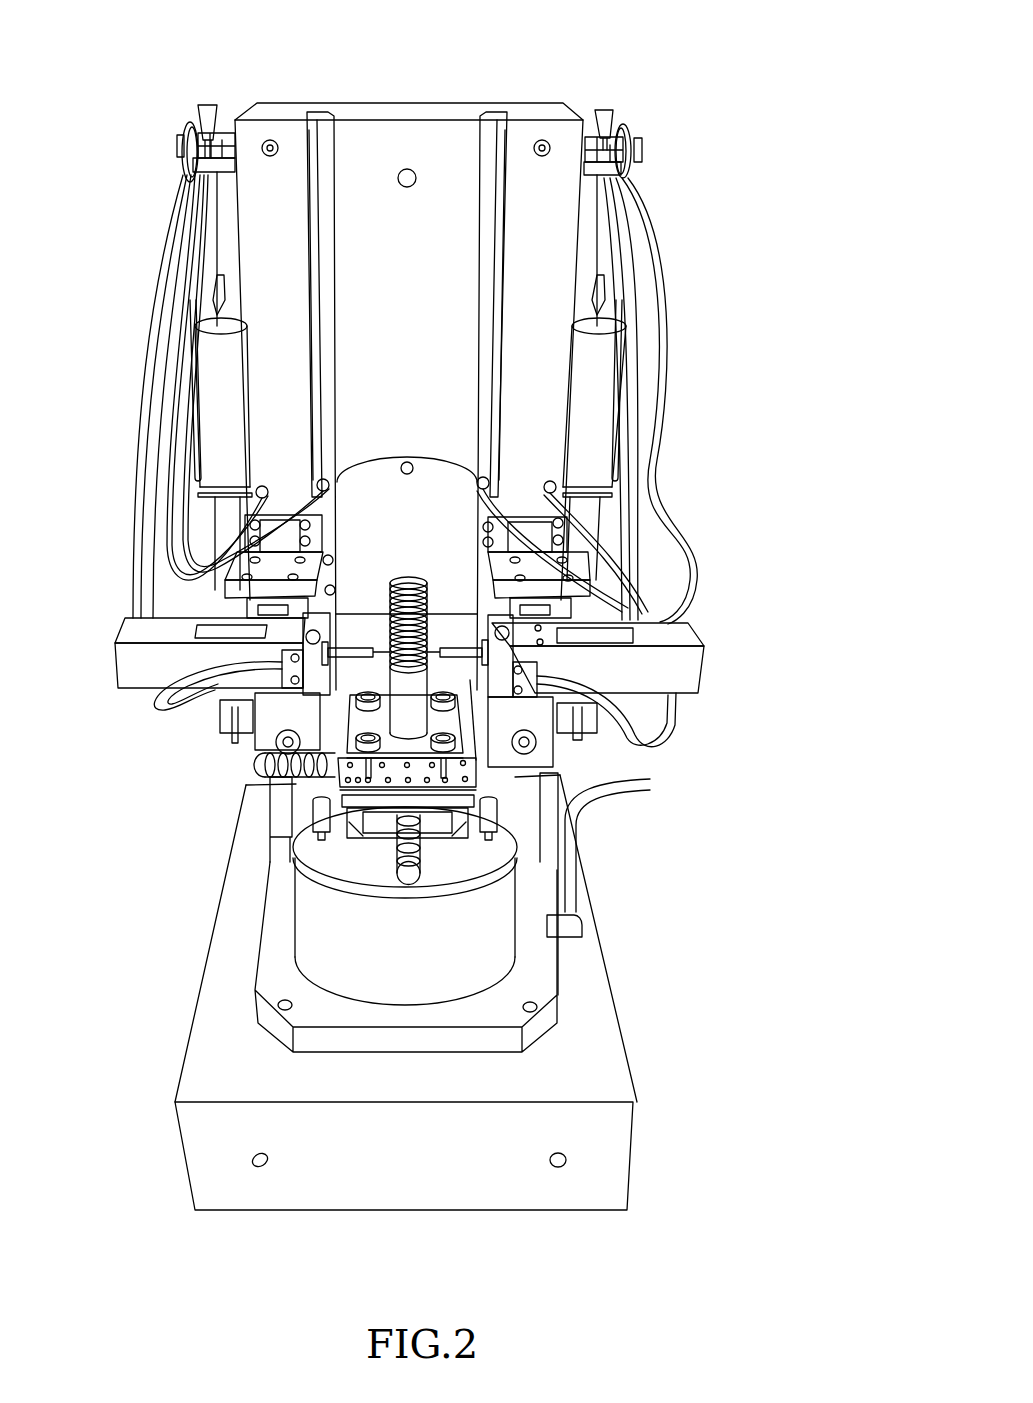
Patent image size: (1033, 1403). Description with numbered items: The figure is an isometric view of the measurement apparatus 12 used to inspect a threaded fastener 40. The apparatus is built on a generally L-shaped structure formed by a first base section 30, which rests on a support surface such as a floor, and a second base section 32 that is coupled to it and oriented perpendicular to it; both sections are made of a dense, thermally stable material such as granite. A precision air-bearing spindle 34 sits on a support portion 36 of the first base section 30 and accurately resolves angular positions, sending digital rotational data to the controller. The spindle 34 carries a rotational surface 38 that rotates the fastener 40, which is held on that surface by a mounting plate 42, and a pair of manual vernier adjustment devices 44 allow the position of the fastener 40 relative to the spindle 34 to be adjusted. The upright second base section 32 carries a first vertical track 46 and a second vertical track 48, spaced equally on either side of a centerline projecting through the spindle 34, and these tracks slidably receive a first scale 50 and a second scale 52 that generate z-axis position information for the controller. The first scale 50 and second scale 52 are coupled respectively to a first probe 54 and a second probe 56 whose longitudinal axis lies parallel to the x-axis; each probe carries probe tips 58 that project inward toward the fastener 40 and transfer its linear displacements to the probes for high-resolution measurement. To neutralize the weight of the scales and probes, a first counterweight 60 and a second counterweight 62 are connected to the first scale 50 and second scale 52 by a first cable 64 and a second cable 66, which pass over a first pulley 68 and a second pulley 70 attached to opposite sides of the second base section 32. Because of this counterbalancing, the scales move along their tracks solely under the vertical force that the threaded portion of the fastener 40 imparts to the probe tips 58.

The measurement apparatus 12 is at (690, 56).
The first base section 30 is at (634, 1157).
The second base section 32 is at (550, 380).
The spindle 34 is at (540, 967).
The support portion 36 is at (597, 1032).
The rotational surface 38 is at (485, 805).
The fastener 40 is at (402, 702).
The mounting plate 42 is at (447, 717).
The manual vernier adjustment devices 44 is at (267, 772).
The first vertical track 46 is at (328, 253).
The second vertical track 48 is at (490, 247).
The first scale 50 is at (267, 568).
The second scale 52 is at (540, 535).
The first probe 54 is at (132, 662).
The second probe 56 is at (680, 637).
The probe tips 58 is at (459, 635).
The first counterweight 60 is at (218, 405).
The second counterweight 62 is at (590, 432).
The first cable 64 is at (195, 303).
The second cable 66 is at (612, 388).
The first pulley 68 is at (179, 137).
The second pulley 70 is at (641, 147).